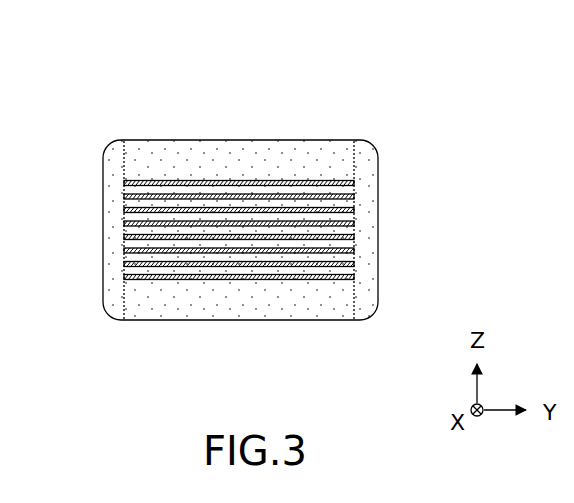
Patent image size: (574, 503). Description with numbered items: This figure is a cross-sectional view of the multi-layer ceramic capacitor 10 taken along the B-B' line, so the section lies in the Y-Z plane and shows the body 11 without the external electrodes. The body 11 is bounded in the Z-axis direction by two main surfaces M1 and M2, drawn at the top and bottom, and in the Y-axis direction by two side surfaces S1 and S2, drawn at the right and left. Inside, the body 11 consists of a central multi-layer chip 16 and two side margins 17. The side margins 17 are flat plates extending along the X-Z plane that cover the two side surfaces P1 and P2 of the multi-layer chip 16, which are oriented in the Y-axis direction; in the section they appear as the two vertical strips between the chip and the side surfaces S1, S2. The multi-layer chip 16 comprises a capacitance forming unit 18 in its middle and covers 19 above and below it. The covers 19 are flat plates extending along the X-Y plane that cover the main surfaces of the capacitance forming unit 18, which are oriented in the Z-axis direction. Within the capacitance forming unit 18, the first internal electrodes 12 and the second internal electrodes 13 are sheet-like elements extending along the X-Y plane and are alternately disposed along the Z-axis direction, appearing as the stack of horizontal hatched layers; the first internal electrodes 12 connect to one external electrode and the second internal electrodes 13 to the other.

The multi-layer ceramic capacitor 10 is at (150, 76).
The body 11 is at (358, 102).
The first internal electrodes 12 is at (136, 262).
The second internal electrodes 13 is at (265, 274).
The multi-layer chip 16 is at (245, 130).
The side margins 17 is at (120, 232).
The capacitance forming unit 18 is at (253, 243).
The covers 19 is at (253, 173).
The main surface M1 is at (216, 139).
The main surface M2 is at (237, 322).
The side surface S1 is at (380, 184).
The side surface S2 is at (103, 185).
The side surface of the multi-layer chip P1 is at (355, 290).
The side surface of the multi-layer chip P2 is at (122, 290).